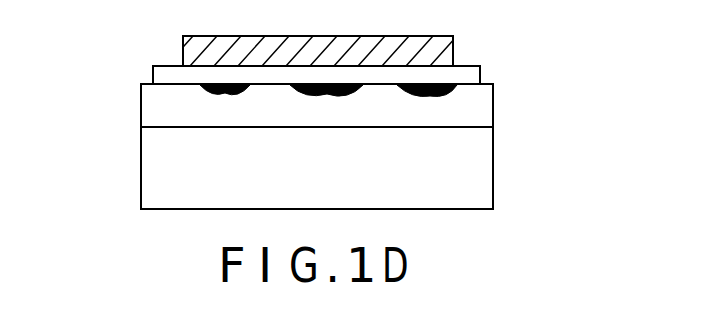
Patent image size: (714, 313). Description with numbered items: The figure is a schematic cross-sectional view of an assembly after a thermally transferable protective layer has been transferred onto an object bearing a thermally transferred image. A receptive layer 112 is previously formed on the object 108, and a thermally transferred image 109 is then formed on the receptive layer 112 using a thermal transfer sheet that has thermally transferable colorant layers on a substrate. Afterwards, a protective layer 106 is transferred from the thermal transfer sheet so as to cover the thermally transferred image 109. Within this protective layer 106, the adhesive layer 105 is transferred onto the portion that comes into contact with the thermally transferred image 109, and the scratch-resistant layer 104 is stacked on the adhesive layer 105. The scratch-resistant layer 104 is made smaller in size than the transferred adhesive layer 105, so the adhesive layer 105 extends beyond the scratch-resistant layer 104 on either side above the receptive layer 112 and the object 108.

The scratch-resistant layer 104 is at (183, 37).
The adhesive layer 105 is at (153, 68).
The protective layer 106 is at (515, 33).
The object 108 is at (483, 176).
The thermally transferred image 109 is at (207, 88).
The receptive layer 112 is at (483, 114).